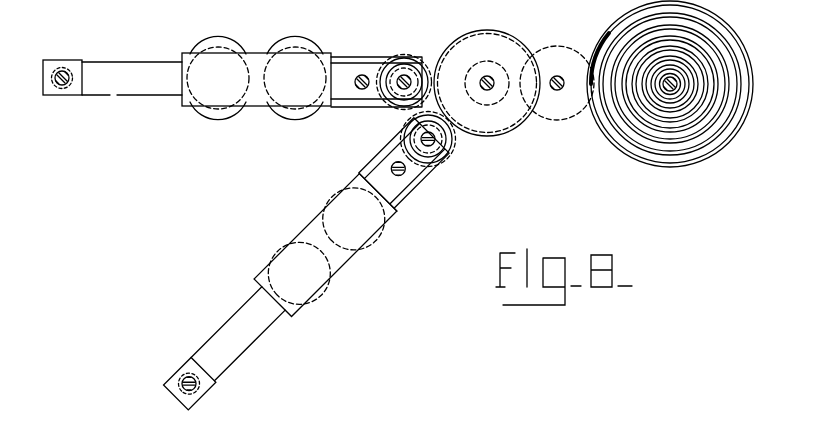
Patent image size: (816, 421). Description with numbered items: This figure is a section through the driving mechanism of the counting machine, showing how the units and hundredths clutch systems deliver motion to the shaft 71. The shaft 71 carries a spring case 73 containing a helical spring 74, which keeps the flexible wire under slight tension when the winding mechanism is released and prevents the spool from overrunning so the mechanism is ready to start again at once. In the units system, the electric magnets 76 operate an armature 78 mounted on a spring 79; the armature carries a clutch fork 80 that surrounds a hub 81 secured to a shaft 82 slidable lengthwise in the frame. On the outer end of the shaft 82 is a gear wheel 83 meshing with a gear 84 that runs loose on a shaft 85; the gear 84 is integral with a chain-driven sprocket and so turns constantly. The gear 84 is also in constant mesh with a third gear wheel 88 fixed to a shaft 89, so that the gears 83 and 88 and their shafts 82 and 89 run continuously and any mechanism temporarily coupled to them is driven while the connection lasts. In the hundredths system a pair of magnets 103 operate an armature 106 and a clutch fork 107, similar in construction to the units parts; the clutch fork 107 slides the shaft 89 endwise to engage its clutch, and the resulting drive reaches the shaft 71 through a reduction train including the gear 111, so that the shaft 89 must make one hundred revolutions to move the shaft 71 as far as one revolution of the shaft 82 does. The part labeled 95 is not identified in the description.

The shaft 71 is at (665, 80).
The spring case 73 is at (728, 29).
The helical spring 74 is at (708, 133).
The electric magnets 76 is at (282, 50).
The armature 78 is at (187, 53).
The spring 79 is at (102, 70).
The clutch fork 80 is at (352, 58).
The hub 81 is at (415, 58).
The shaft 82 is at (402, 86).
The gear wheel 83 is at (433, 55).
The gear 84 is at (487, 30).
The shaft 85 is at (485, 78).
The third gear wheel 88 is at (428, 139).
The shaft 89 is at (428, 139).
The shaft 95 is at (558, 90).
The pair of magnets 103 is at (299, 274).
The armature 106 is at (325, 245).
The clutch fork 107 is at (354, 219).
The gear 111 is at (563, 46).